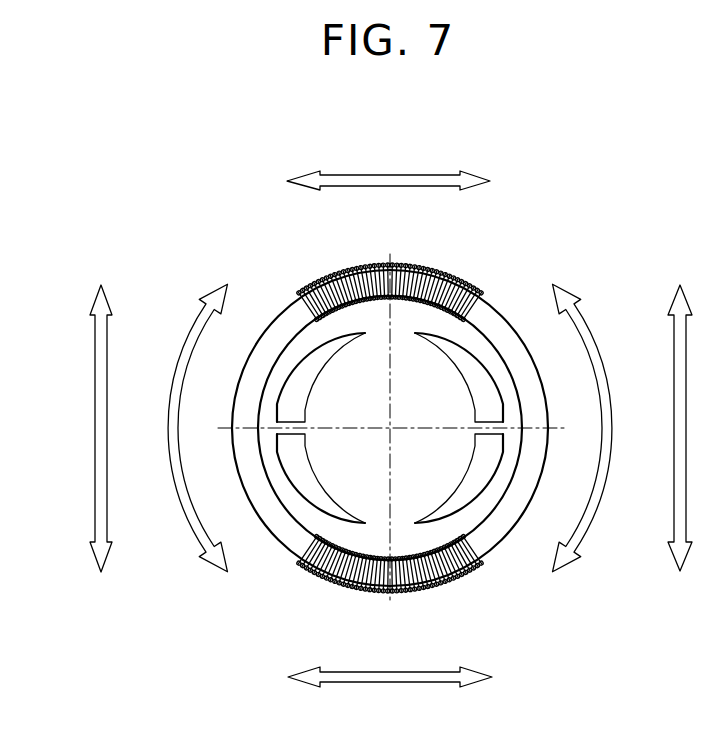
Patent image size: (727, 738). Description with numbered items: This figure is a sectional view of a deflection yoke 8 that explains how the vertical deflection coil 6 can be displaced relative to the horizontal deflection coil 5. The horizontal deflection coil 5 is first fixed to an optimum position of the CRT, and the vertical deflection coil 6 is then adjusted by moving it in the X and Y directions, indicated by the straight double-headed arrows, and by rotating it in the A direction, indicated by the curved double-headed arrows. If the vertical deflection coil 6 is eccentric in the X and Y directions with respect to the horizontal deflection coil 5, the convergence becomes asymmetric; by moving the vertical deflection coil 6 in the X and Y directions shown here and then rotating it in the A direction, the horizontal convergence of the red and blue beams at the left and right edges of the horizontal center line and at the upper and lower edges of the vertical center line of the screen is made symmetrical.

The horizontal deflection coil 5 is at (475, 488).
The vertical deflection coil 6 is at (445, 273).
The deflection yoke 8 is at (495, 315).
The X direction X is at (392, 178).
The Y direction Y is at (97, 377).
The A direction A is at (203, 313).